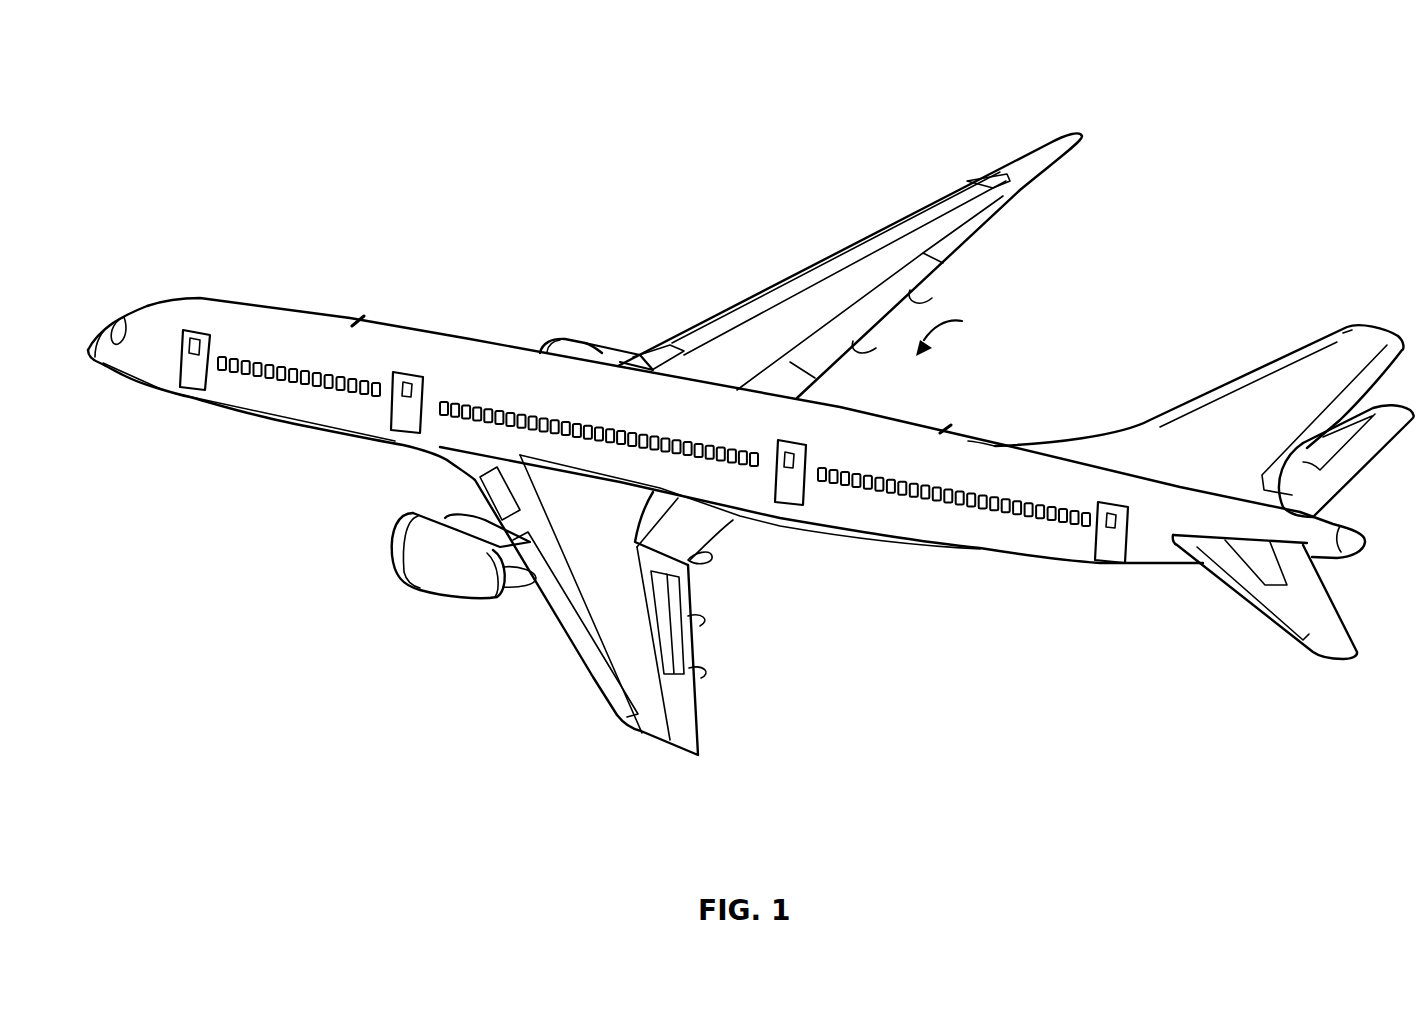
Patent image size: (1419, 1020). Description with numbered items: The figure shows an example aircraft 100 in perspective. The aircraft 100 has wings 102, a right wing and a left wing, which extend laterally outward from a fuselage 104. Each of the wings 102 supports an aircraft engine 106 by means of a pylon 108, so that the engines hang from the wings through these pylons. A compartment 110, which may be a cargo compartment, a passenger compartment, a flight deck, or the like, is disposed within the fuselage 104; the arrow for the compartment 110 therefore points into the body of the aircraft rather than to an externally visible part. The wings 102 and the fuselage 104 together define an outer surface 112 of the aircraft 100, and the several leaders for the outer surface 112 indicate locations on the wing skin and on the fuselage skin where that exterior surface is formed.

The aircraft 100 is at (1283, 108).
The wings 102 is at (861, 238).
The fuselage 104 is at (752, 505).
The aircraft engine 106 is at (567, 348).
The pylon 108 is at (617, 347).
The compartment 110 is at (964, 333).
The outer surface 112 is at (737, 350).